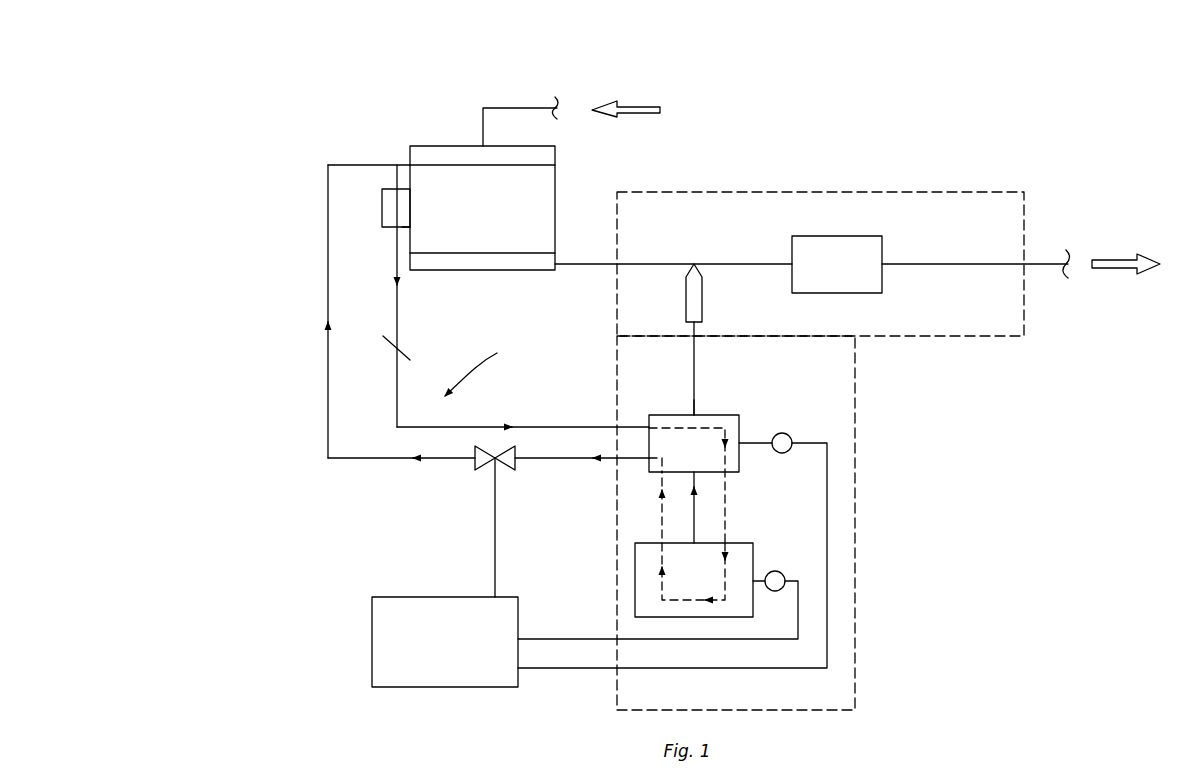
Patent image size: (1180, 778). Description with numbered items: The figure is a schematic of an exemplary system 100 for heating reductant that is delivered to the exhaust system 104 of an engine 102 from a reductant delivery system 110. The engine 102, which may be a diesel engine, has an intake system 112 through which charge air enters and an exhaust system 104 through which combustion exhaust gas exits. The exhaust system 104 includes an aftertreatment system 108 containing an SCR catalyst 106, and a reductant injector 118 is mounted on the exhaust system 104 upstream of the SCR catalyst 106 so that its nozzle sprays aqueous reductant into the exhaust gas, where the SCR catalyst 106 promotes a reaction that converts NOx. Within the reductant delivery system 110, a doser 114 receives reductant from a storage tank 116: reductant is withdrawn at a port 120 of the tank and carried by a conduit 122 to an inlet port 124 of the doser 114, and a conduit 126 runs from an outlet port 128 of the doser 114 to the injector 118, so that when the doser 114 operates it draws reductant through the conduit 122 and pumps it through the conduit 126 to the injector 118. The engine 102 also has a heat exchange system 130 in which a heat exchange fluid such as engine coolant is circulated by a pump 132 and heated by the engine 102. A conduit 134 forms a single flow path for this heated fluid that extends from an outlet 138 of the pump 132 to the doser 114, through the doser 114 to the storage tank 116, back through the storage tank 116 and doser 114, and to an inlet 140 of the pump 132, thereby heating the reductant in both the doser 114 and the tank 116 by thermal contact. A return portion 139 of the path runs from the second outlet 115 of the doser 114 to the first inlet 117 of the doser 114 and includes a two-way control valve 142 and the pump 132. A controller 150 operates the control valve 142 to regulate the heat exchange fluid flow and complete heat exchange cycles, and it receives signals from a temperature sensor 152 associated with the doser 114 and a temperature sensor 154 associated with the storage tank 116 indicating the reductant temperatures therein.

The system 100 is at (695, 78).
The engine 102 is at (551, 190).
The exhaust system 104 is at (585, 274).
The SCR catalyst 106 is at (833, 248).
The aftertreatment system 108 is at (773, 190).
The reductant delivery system 110 is at (859, 487).
The intake system 112 is at (518, 103).
The doser 114 is at (735, 413).
The second outlet 115 is at (649, 465).
The storage tank 116 is at (742, 543).
The first inlet 117 is at (649, 420).
The reductant injector 118 is at (703, 295).
The port 120 is at (695, 540).
The conduit 122 is at (695, 500).
The inlet port 124 is at (662, 491).
The conduit 126 is at (692, 363).
The outlet port 128 is at (695, 415).
The heat exchange system 130 is at (296, 431).
The pump 132 is at (375, 220).
The conduit 134 is at (430, 460).
The outlet 138 is at (403, 226).
The return portion 139 is at (325, 225).
The inlet 140 is at (388, 190).
The control valve 142 is at (507, 472).
The controller 150 is at (431, 647).
The temperature sensor 152 is at (787, 433).
The temperature sensor 154 is at (782, 573).